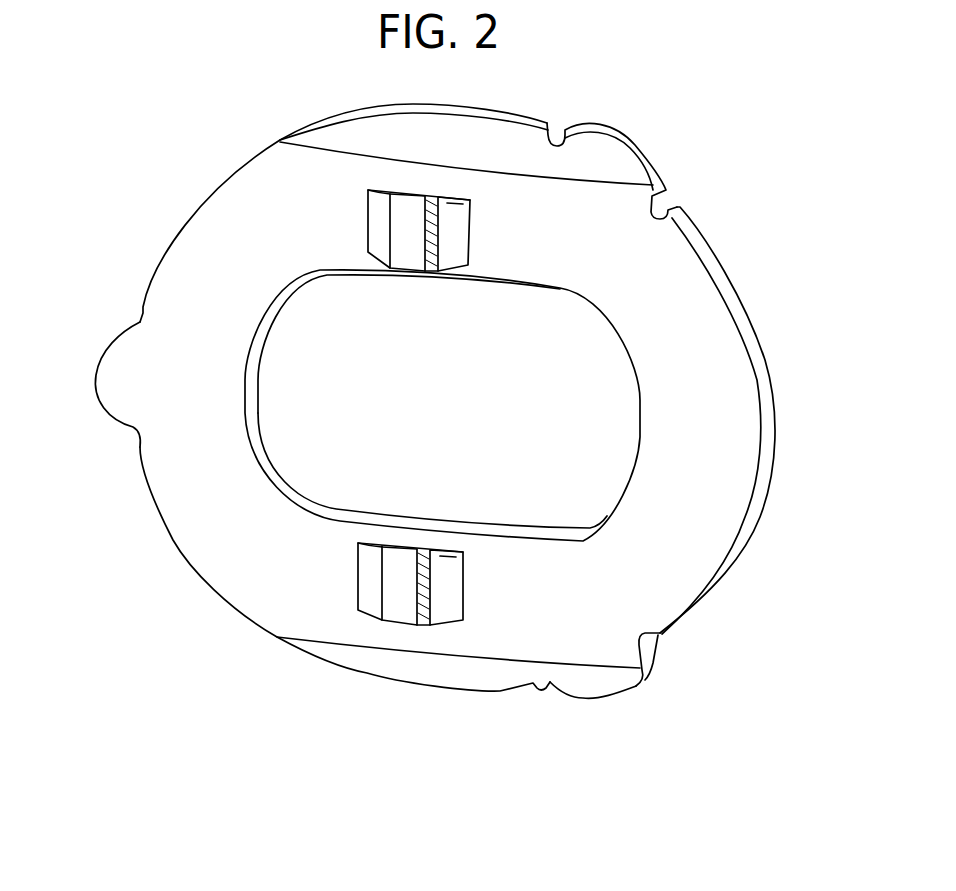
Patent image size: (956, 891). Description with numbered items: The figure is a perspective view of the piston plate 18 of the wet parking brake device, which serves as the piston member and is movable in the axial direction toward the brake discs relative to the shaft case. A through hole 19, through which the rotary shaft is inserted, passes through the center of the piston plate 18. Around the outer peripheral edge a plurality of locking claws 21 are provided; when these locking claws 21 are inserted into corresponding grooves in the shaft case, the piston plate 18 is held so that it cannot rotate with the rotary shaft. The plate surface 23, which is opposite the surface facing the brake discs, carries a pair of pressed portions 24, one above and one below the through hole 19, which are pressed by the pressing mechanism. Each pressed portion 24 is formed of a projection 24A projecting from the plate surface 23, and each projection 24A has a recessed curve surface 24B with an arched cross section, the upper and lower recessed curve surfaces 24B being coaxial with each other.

The piston plate 18 is at (724, 252).
The through hole 19 is at (587, 483).
The locking claw 21 is at (640, 133).
The plate surface 23 is at (243, 552).
The pressed portion 24 is at (389, 430).
The projection 24A is at (457, 233).
The recessed curve surface 24B is at (410, 235).